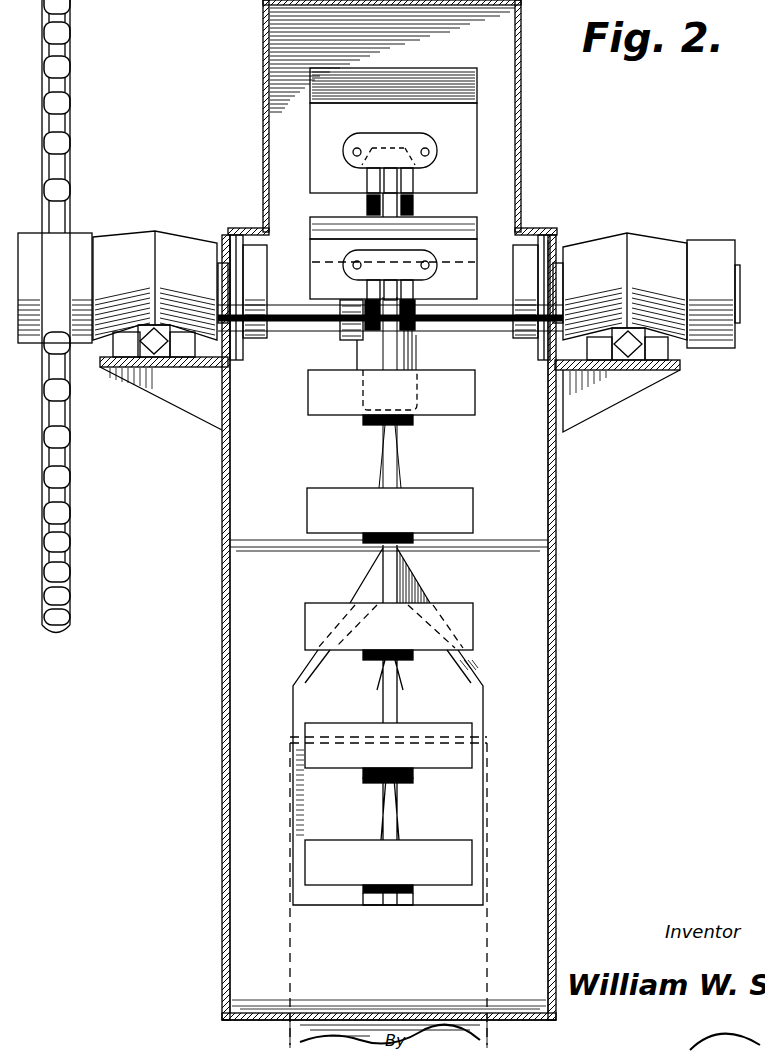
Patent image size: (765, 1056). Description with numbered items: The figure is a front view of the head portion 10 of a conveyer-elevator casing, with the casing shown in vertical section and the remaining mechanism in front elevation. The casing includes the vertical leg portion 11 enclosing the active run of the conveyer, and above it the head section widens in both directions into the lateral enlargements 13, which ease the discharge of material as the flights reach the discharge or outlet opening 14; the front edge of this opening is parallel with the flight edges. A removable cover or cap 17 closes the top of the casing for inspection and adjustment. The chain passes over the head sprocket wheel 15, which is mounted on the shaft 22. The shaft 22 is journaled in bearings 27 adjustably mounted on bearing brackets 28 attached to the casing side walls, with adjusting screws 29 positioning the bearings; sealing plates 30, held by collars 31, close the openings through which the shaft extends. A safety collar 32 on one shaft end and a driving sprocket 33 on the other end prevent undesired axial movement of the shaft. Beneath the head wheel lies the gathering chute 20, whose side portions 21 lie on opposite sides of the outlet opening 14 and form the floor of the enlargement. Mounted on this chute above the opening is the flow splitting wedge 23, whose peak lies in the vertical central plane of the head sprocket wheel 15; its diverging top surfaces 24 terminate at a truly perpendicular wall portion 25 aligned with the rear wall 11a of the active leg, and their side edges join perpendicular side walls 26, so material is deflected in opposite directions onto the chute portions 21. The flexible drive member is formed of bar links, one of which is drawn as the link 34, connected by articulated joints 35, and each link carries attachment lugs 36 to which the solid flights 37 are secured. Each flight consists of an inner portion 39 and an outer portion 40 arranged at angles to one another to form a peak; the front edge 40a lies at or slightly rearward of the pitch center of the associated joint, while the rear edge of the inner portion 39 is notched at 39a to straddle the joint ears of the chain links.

The head portion of conveyer-elevator casing 10 is at (564, 716).
The vertical leg portion 11 is at (292, 1040).
The rear wall of active vertical leg 11a is at (482, 783).
The lateral enlargement 13 is at (556, 888).
The discharge or outlet opening 14 is at (488, 883).
The head sprocket wheel 15 is at (365, 355).
The cover or cap 17 is at (264, 94).
The gathering chute 20 is at (536, 496).
The side portions of gathering chute 21 is at (525, 808).
The shaft 22 is at (482, 322).
The flow splitting wedge 23 is at (344, 598).
The diverging top surfaces 24 is at (367, 584).
The perpendicular wall portion 25 is at (388, 729).
The perpendicular side walls 26 is at (293, 712).
The bearings 27 is at (165, 234).
The bearing brackets 28 is at (160, 402).
The adjusting screws 29 is at (150, 345).
The sealing plates 30 is at (240, 362).
The collars 31 is at (262, 340).
The safety collar 32 is at (710, 240).
The driving sprocket 33 is at (82, 232).
The shaft 34 is at (392, 820).
The articulated joints 35 is at (410, 779).
The attachment lugs 36 is at (398, 133).
The flights 37 is at (305, 160).
The inner flight portion 39 is at (470, 166).
The notch 39a is at (414, 186).
The outer flight portion 40 is at (478, 84).
The front edge of flight 40a is at (329, 416).